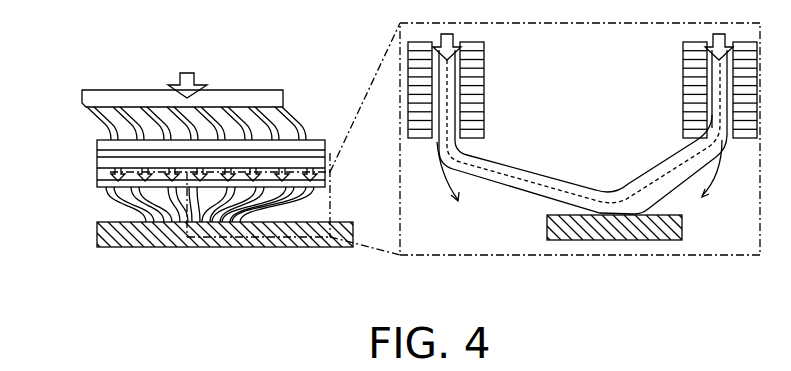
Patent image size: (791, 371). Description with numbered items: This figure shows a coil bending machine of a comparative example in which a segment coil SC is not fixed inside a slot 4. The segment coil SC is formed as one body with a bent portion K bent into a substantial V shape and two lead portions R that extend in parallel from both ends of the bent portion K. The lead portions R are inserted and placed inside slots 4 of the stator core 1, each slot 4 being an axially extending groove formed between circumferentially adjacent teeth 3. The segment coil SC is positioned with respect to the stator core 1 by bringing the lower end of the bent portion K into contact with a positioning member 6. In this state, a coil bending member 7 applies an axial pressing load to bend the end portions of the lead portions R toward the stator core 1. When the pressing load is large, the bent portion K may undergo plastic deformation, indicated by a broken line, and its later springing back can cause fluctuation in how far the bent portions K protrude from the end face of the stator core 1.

The stator core 1 is at (318, 133).
The teeth 3 is at (484, 92).
The slot 4 is at (437, 127).
The positioning member 6 is at (118, 220).
The coil bending member 7 is at (121, 90).
The lead portions R is at (110, 123).
The segment coil SC is at (120, 208).
The bent portion K is at (608, 195).